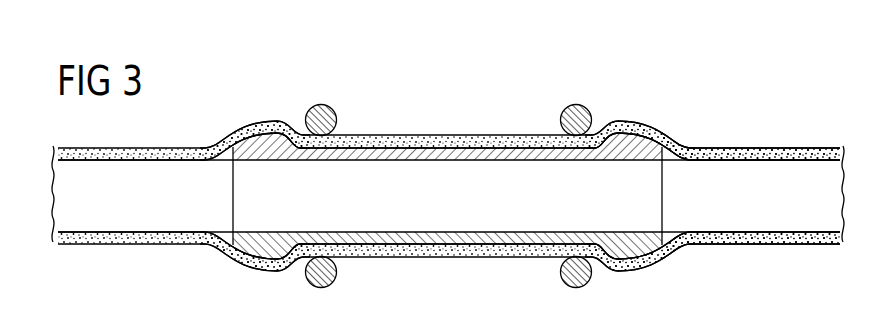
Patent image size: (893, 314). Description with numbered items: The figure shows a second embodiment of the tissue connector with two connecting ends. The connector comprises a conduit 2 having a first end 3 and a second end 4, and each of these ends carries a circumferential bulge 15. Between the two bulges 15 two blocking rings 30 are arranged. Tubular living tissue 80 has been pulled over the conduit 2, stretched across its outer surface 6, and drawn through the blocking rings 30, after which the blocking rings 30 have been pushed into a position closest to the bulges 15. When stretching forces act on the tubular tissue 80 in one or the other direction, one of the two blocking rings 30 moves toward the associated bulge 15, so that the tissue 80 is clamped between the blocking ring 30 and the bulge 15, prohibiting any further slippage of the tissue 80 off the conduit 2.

The conduit 2 is at (452, 168).
The first end 3 is at (247, 192).
The second end 4 is at (653, 192).
The outer surface 6 is at (502, 142).
The circumferential bulge 15 is at (273, 133).
The blocking ring 30 is at (335, 112).
The tubular living tissue 80 is at (735, 152).